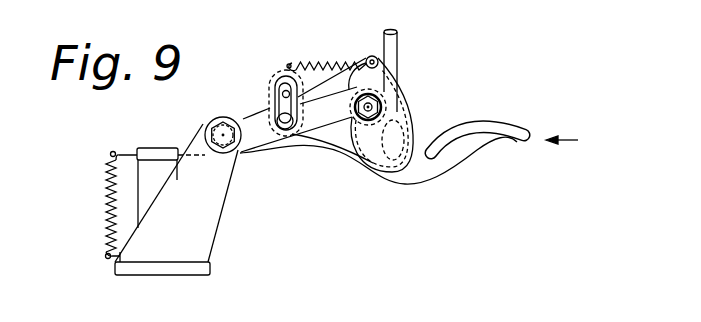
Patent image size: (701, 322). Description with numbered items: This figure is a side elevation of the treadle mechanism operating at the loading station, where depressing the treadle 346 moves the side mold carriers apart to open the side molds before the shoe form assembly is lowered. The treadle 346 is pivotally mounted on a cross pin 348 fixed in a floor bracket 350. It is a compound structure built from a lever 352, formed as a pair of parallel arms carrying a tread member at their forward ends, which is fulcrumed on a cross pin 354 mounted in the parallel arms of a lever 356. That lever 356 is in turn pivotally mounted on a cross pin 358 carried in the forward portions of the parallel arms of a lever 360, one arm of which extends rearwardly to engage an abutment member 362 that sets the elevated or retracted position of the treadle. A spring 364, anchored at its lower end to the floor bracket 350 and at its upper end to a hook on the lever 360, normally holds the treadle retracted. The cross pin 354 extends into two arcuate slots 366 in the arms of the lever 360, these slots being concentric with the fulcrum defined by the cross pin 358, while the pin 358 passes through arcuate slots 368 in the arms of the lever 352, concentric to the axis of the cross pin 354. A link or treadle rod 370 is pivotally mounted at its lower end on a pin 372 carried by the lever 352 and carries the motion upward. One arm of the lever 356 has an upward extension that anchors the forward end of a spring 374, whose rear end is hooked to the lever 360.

The treadle 346 is at (583, 141).
The cross pin 348 is at (220, 128).
The floor bracket 350 is at (200, 235).
The lever 352 is at (443, 160).
The cross pin 354 is at (285, 129).
The lever 356 is at (361, 157).
The cross pin 358 is at (381, 101).
The lever 360 is at (160, 146).
The abutment member 362 is at (150, 200).
The spring 364 is at (107, 203).
The arcuate slots 366 is at (282, 92).
The arcuate slots 368 is at (372, 80).
The treadle rod 370 is at (391, 55).
The pin 372 is at (402, 124).
The spring 374 is at (296, 58).